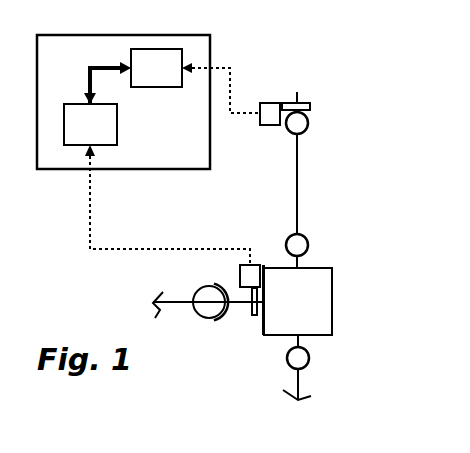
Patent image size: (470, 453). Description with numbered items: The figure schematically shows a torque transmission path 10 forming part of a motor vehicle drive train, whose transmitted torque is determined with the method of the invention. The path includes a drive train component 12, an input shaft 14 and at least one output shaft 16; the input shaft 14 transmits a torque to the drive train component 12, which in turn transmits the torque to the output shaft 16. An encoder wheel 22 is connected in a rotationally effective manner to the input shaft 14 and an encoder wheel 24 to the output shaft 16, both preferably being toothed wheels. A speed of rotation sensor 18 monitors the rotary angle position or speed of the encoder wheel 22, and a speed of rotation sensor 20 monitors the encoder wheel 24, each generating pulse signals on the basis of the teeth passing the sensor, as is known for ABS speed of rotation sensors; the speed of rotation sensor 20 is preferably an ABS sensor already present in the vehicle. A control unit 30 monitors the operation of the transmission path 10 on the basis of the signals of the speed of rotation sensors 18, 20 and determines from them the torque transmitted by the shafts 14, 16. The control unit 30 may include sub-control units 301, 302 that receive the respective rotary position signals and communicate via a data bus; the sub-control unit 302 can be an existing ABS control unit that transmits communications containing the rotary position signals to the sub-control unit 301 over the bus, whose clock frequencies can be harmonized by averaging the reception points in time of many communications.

The torque transmission path 10 is at (360, 150).
The drive train component 12 is at (332, 320).
The input shaft 14 is at (178, 297).
The output shaft 16 is at (298, 207).
The speed of rotation sensor 18 is at (258, 265).
The speed of rotation sensor 20 is at (259, 120).
The encoder wheel 22 is at (250, 307).
The encoder wheel 24 is at (300, 98).
The control unit 30 is at (145, 169).
The sub-control unit 301 is at (64, 113).
The sub-control unit 302 is at (167, 87).